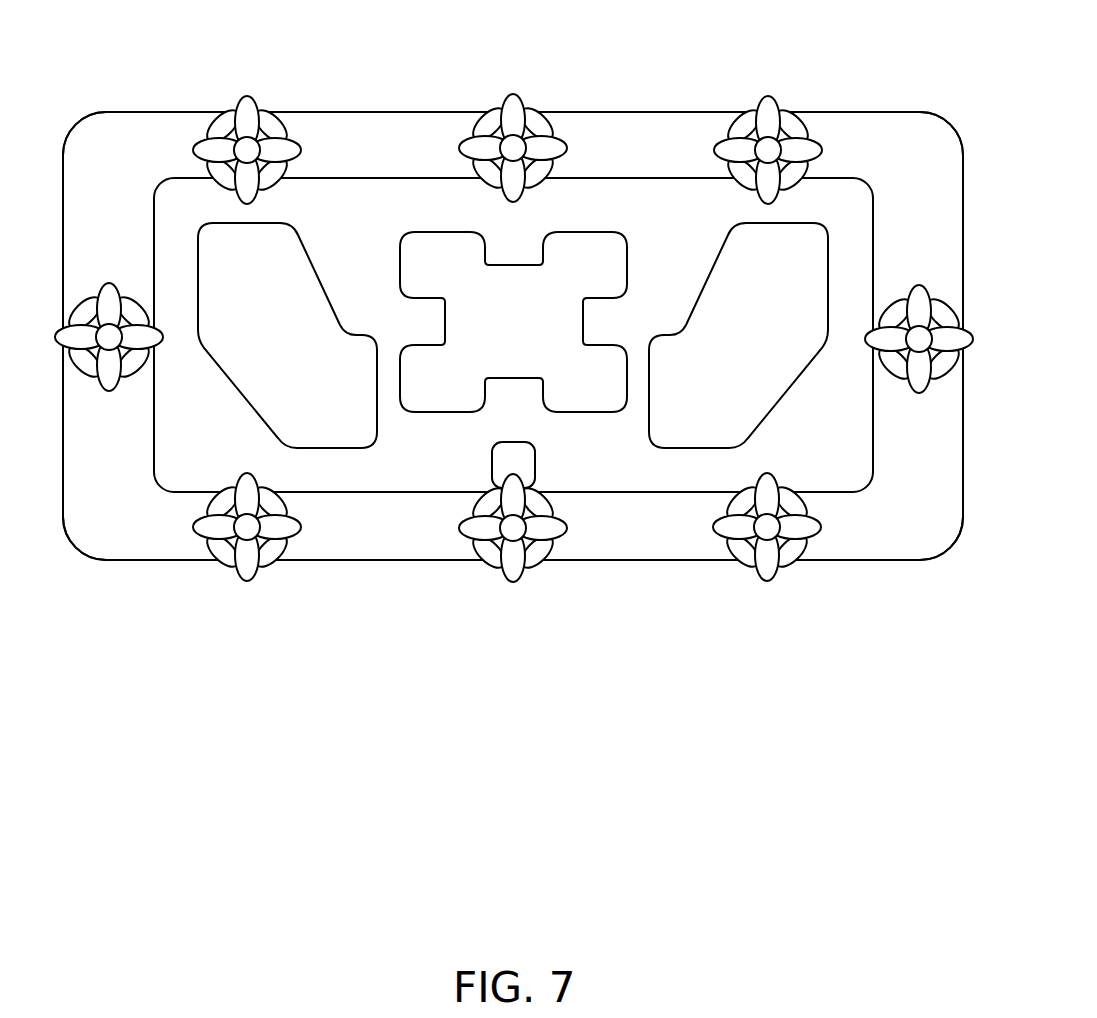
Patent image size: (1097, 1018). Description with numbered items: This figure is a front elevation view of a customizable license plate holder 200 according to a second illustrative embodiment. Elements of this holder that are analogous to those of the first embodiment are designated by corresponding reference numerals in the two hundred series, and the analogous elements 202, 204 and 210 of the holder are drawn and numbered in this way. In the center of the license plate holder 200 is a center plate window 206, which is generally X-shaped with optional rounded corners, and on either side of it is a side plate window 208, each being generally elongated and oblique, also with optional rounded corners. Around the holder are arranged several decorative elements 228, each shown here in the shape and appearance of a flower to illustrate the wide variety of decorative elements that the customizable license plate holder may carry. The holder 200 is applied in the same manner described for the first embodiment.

The customizable license plate holder 200 is at (365, 58).
The outer edge of carrier 202 is at (370, 562).
The inner edge of carrier 204 is at (658, 537).
The center plate window 206 is at (622, 260).
The side plate window 208 is at (296, 265).
The small aperture 210 is at (503, 444).
The decorative element 228 is at (537, 118).